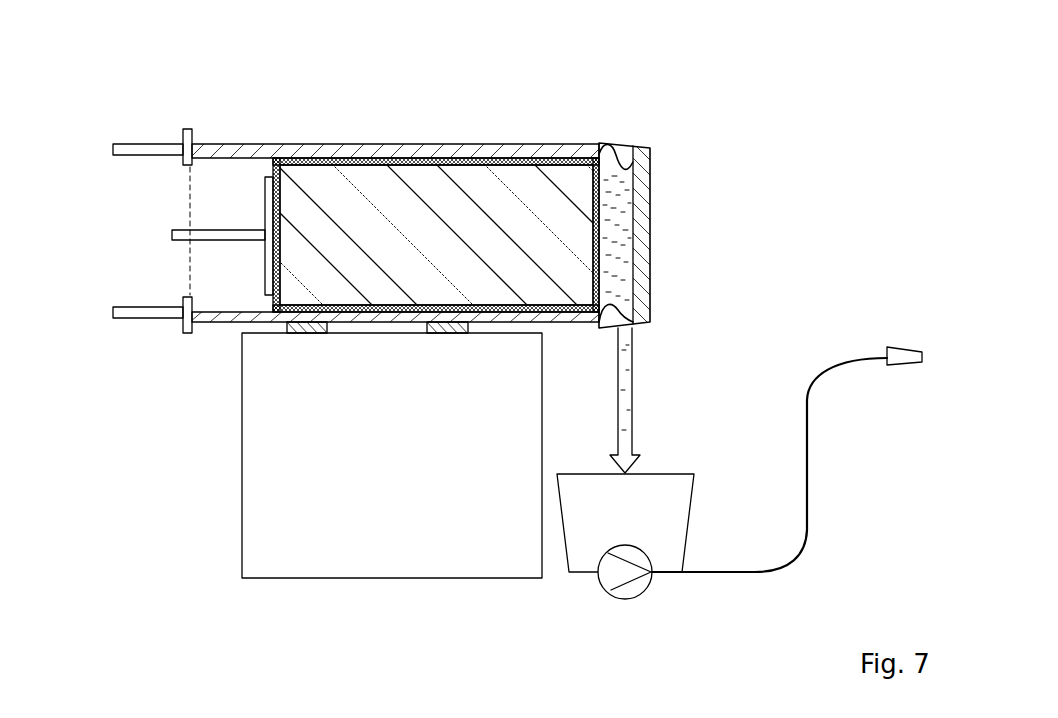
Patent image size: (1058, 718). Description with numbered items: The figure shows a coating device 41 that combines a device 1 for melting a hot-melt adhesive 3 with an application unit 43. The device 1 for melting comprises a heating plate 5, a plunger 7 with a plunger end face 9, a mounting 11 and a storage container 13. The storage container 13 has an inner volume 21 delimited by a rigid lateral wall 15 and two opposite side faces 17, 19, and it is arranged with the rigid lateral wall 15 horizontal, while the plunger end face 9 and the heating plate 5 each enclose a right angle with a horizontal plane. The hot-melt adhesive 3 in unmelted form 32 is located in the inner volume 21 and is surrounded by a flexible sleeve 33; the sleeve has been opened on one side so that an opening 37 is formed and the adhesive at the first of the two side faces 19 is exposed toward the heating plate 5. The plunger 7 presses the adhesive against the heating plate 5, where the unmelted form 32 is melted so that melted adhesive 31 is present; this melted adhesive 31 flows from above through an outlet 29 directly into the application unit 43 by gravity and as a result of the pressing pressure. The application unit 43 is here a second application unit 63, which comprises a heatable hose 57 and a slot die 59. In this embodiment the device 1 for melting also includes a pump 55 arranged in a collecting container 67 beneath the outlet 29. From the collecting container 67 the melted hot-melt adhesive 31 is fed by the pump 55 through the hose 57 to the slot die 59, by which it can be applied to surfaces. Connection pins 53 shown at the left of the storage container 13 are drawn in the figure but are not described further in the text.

The device for melting 1 is at (118, 114).
The hot-melt adhesive 3 is at (497, 187).
The unmelted form 32 is at (455, 203).
The heating plate 5 is at (633, 146).
The plunger 7 is at (171, 235).
The plunger end face 9 is at (287, 200).
The mounting 11 is at (303, 335).
The storage container 13 is at (396, 138).
The rigid lateral wall 15 is at (357, 144).
The second side face 17 is at (185, 191).
The first side face 19 is at (606, 190).
The inner volume 21 is at (451, 182).
The outlet 29 is at (620, 335).
The melted adhesive 31 is at (634, 248).
The flexible sleeve 33 is at (320, 160).
The opening 37 is at (609, 206).
The coating device 41 is at (797, 143).
The application unit 43 is at (903, 338).
The second application unit 63 is at (904, 392).
The connection pins 53 is at (112, 150).
The pump 55 is at (637, 587).
The hose 57 is at (810, 461).
The slot die 59 is at (903, 366).
The collecting container 67 is at (676, 513).